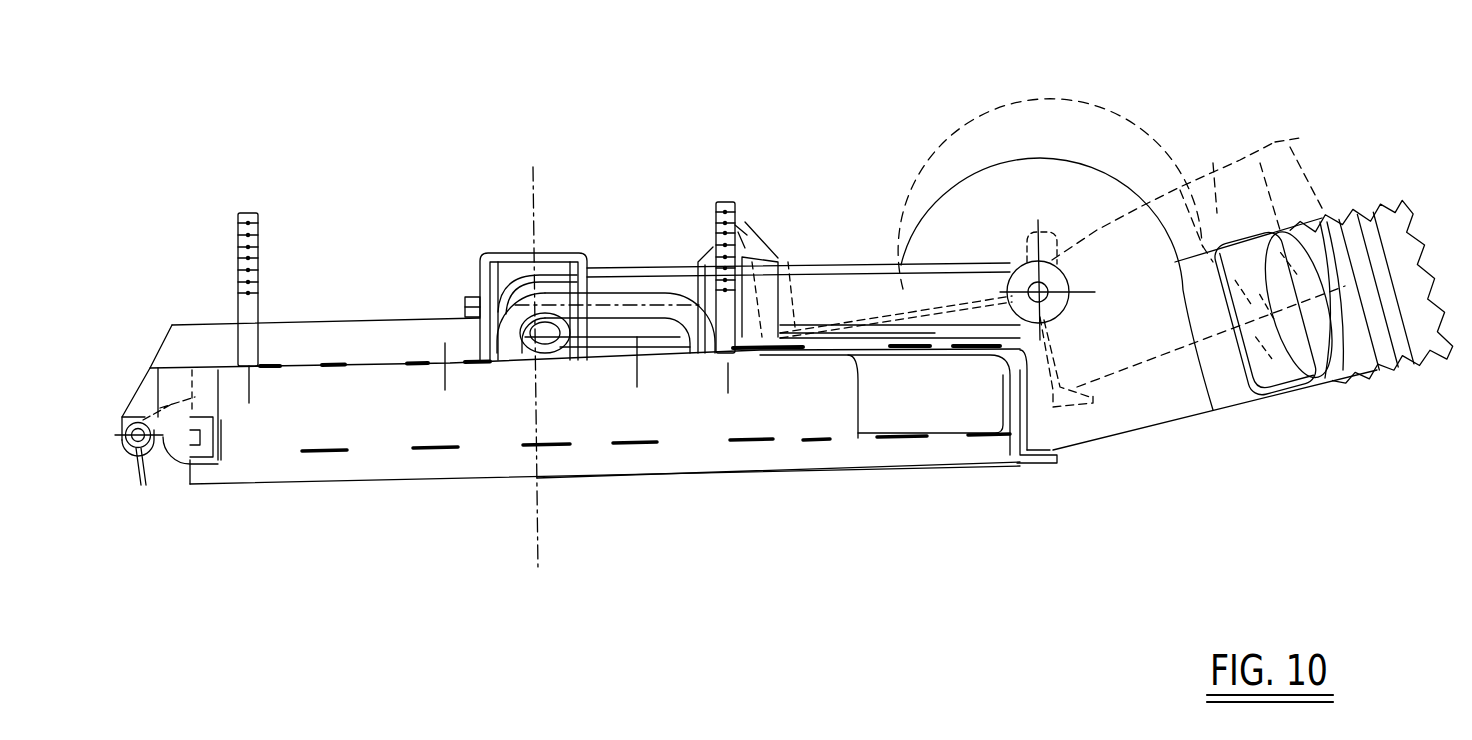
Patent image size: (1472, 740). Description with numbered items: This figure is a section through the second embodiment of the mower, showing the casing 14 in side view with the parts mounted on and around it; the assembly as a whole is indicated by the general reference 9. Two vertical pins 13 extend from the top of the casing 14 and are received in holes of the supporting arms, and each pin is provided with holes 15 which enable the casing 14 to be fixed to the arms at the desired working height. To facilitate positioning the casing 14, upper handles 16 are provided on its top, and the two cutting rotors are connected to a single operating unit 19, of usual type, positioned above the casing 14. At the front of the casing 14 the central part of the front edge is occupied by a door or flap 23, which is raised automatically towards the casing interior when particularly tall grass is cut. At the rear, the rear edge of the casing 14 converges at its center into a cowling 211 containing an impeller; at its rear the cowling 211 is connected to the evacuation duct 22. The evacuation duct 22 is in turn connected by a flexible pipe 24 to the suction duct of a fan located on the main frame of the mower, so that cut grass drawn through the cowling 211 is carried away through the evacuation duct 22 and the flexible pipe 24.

The loading apparatus 9 is at (688, 488).
The vertical pins 13 is at (245, 212).
The casing 14 is at (478, 427).
The holes 15 is at (258, 243).
The upper handles 16 is at (627, 293).
The operating unit 19 is at (533, 272).
The evacuation duct 22 is at (1170, 397).
The door or flap 23 is at (148, 472).
The flexible pipe 24 is at (1423, 367).
The cowling 211 is at (1093, 167).